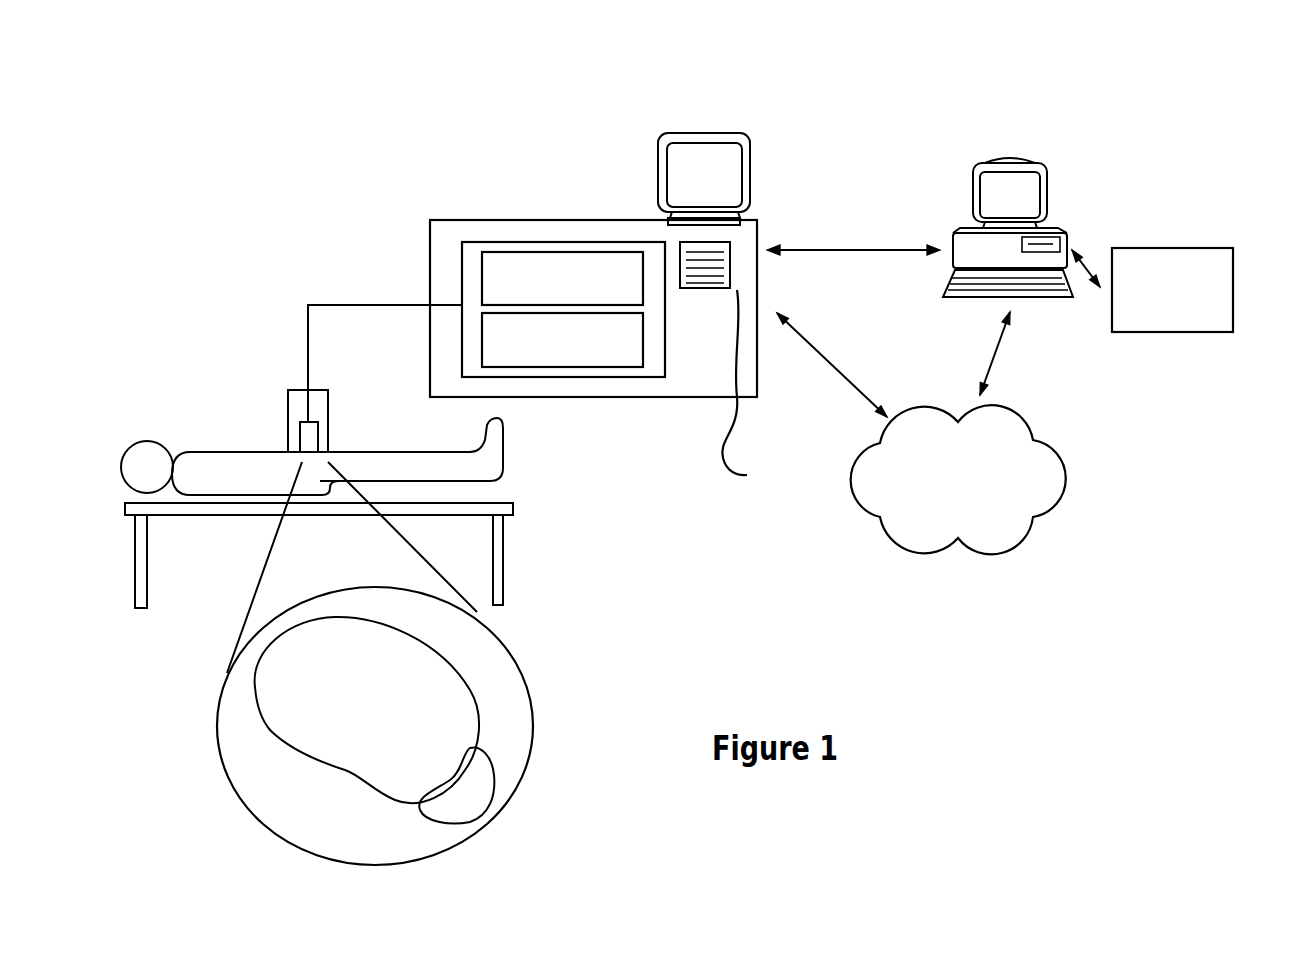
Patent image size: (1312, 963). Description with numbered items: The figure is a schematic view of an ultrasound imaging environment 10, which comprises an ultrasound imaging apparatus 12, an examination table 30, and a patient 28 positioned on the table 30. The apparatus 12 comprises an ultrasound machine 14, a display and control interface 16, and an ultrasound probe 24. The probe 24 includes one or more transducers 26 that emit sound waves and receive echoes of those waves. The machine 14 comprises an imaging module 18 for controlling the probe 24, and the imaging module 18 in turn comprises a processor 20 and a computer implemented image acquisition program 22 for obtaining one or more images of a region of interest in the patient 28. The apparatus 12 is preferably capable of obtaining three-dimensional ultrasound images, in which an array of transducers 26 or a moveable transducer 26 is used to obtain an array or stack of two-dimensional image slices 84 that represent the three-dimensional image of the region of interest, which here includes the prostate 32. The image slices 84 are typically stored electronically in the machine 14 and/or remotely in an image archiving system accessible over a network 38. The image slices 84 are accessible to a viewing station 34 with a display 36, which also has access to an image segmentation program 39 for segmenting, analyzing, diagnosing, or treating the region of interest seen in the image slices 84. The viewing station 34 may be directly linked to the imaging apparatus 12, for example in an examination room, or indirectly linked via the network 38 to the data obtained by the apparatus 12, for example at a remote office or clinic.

The ultrasound imaging environment 10 is at (328, 98).
The ultrasound imaging apparatus 12 is at (632, 178).
The ultrasound machine 14 is at (663, 397).
The display and control interface 16 is at (752, 166).
The imaging module 18 is at (665, 338).
The processor 20 is at (482, 263).
The image acquisition program 22 is at (482, 347).
The ultrasound probe 24 is at (288, 410).
The transducer 26 is at (318, 432).
The patient 28 is at (492, 461).
The examination table 30 is at (503, 533).
The prostate 32 is at (503, 772).
The viewing station 34 is at (955, 207).
The display 36 is at (1042, 185).
The network 38 is at (907, 541).
The image segmentation program 39 is at (1233, 278).
The 2-D image slices 84 is at (759, 391).